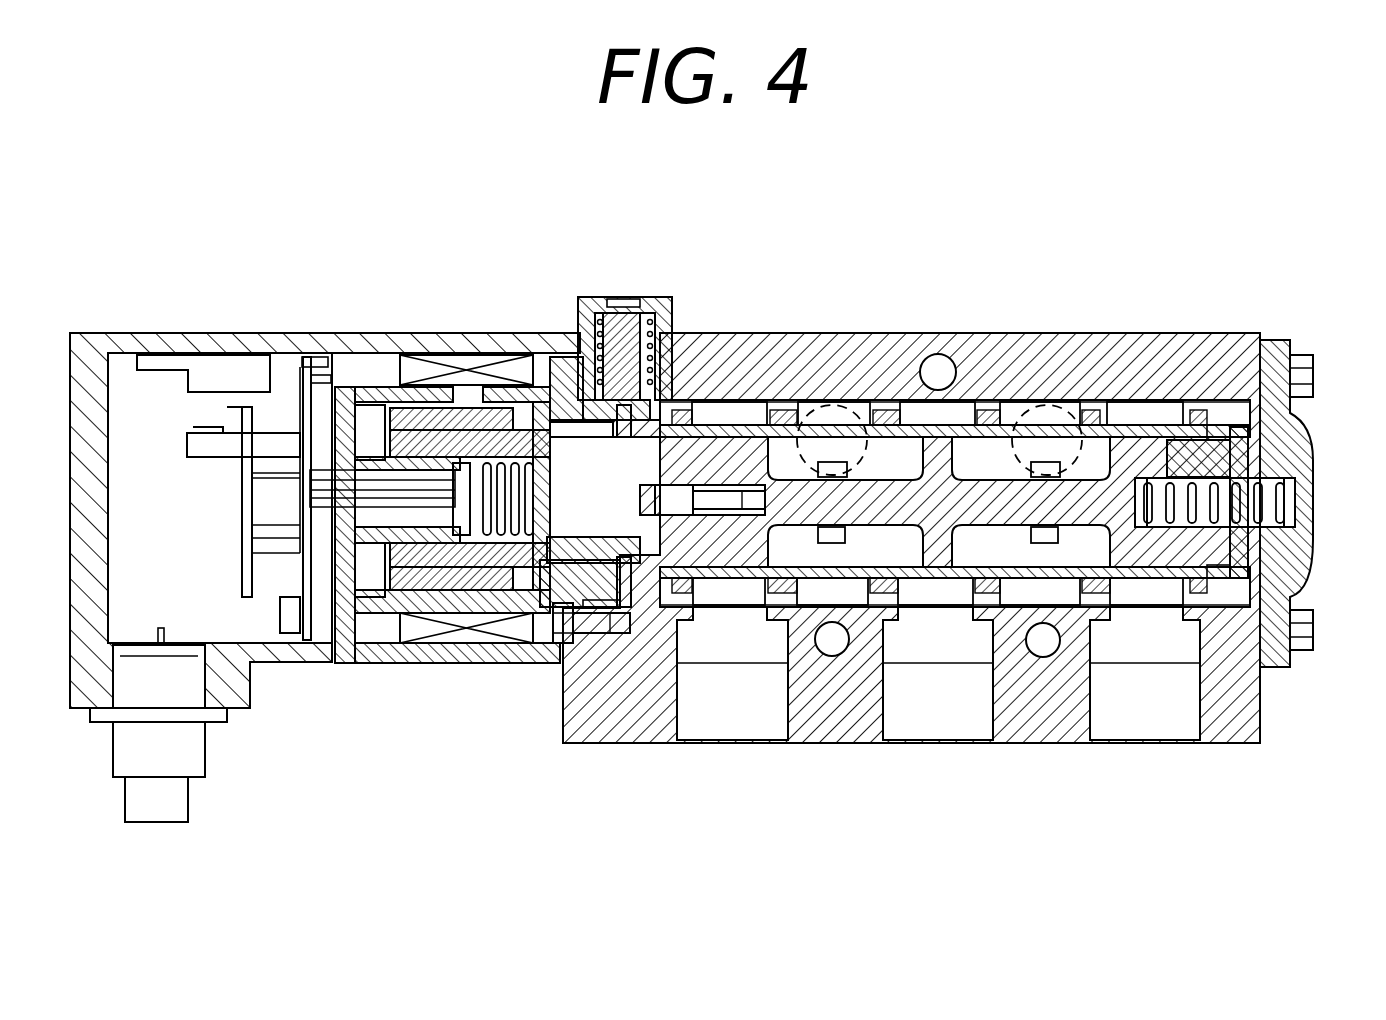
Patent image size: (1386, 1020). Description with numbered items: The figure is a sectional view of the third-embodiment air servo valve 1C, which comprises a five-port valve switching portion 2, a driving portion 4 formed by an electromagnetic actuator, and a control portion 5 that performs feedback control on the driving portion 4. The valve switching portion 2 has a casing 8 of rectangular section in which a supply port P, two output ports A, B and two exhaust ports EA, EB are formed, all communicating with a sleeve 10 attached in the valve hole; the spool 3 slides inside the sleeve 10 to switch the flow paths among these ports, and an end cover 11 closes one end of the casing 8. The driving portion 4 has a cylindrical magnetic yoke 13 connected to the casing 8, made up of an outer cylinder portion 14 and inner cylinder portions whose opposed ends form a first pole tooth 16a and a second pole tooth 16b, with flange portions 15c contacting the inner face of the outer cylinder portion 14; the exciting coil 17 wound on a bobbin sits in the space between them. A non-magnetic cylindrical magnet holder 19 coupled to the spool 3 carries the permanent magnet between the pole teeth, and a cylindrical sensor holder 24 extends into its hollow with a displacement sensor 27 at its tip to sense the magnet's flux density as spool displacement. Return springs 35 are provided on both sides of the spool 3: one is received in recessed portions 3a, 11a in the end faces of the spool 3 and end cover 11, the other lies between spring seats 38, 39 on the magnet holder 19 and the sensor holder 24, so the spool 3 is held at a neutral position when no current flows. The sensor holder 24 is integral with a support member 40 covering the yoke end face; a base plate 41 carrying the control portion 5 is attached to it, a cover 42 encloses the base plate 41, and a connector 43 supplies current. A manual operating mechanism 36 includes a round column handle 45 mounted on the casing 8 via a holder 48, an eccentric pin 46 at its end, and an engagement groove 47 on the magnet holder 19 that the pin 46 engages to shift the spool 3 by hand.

The air servo valve 1C is at (1194, 155).
The valve switching portion 2 is at (1022, 290).
The spool 3 is at (983, 495).
The recessed portion 3a is at (1160, 465).
The driving portion 4 is at (492, 252).
The control portion 5 is at (288, 500).
The casing 8 is at (868, 333).
The sleeve 10 is at (734, 402).
The end cover 11 is at (1314, 438).
The recessed portion 11a is at (1292, 535).
The yoke 13 is at (453, 350).
The outer cylinder portion 14 is at (390, 348).
The flange portions 15c is at (366, 352).
The first pole tooth 16a is at (432, 356).
The second pole tooth 16b is at (522, 370).
The exciting coil 17 is at (470, 352).
The magnet holder 19 is at (593, 632).
The sensor holder 24 is at (365, 645).
The displacement sensor 27 is at (442, 562).
The return springs 35 is at (1300, 502).
The manual operating mechanism 36 is at (629, 283).
The spring seat 38 is at (548, 562).
The spring seat 39 is at (466, 542).
The support member 40 is at (342, 652).
The base plate 41 is at (300, 362).
The cover 42 is at (92, 333).
The connector 43 is at (186, 760).
The handle 45 is at (644, 322).
The pin 46 is at (656, 345).
The engagement groove 47 is at (623, 562).
The holder 48 is at (587, 295).
The output port A is at (831, 405).
The output port B is at (1048, 405).
The exhaust port EA is at (728, 712).
The supply port P is at (936, 712).
The exhaust port EB is at (1149, 712).